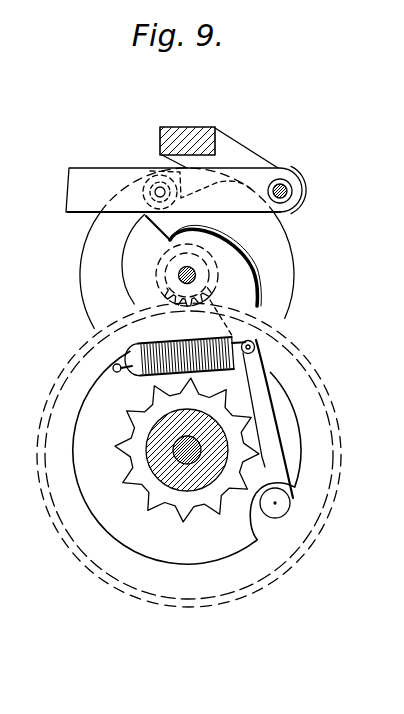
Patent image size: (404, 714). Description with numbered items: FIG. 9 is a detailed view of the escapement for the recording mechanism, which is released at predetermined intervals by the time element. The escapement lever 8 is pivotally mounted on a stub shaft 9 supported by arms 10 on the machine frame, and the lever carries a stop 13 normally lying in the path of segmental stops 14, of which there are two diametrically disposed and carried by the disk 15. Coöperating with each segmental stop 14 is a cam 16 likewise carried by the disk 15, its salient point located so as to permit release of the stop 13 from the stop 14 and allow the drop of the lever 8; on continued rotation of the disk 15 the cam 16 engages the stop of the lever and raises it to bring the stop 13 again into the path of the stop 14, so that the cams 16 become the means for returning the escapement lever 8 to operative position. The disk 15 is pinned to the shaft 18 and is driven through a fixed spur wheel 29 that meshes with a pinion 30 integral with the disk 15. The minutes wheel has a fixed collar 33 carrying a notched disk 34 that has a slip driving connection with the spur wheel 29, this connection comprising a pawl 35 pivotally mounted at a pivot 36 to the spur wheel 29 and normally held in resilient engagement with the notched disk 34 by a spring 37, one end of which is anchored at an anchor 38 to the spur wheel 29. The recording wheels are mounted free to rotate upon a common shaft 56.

The escapement lever 8 is at (83, 170).
The stub shaft 9 is at (283, 190).
The arms 10 is at (222, 172).
The stop 13 is at (150, 176).
The segmental stops 14 is at (212, 182).
The disk 15 is at (283, 263).
The cam 16 is at (128, 250).
The shaft 18 is at (178, 275).
The spur wheel 29 is at (312, 405).
The pinion 30 is at (207, 272).
The fixed collar 33 is at (163, 477).
The notched disk 34 is at (192, 512).
The pawl 35 is at (263, 373).
The pivot 36 is at (277, 505).
The spring 37 is at (160, 346).
The anchor 38 is at (112, 368).
The common shaft 56 is at (175, 452).